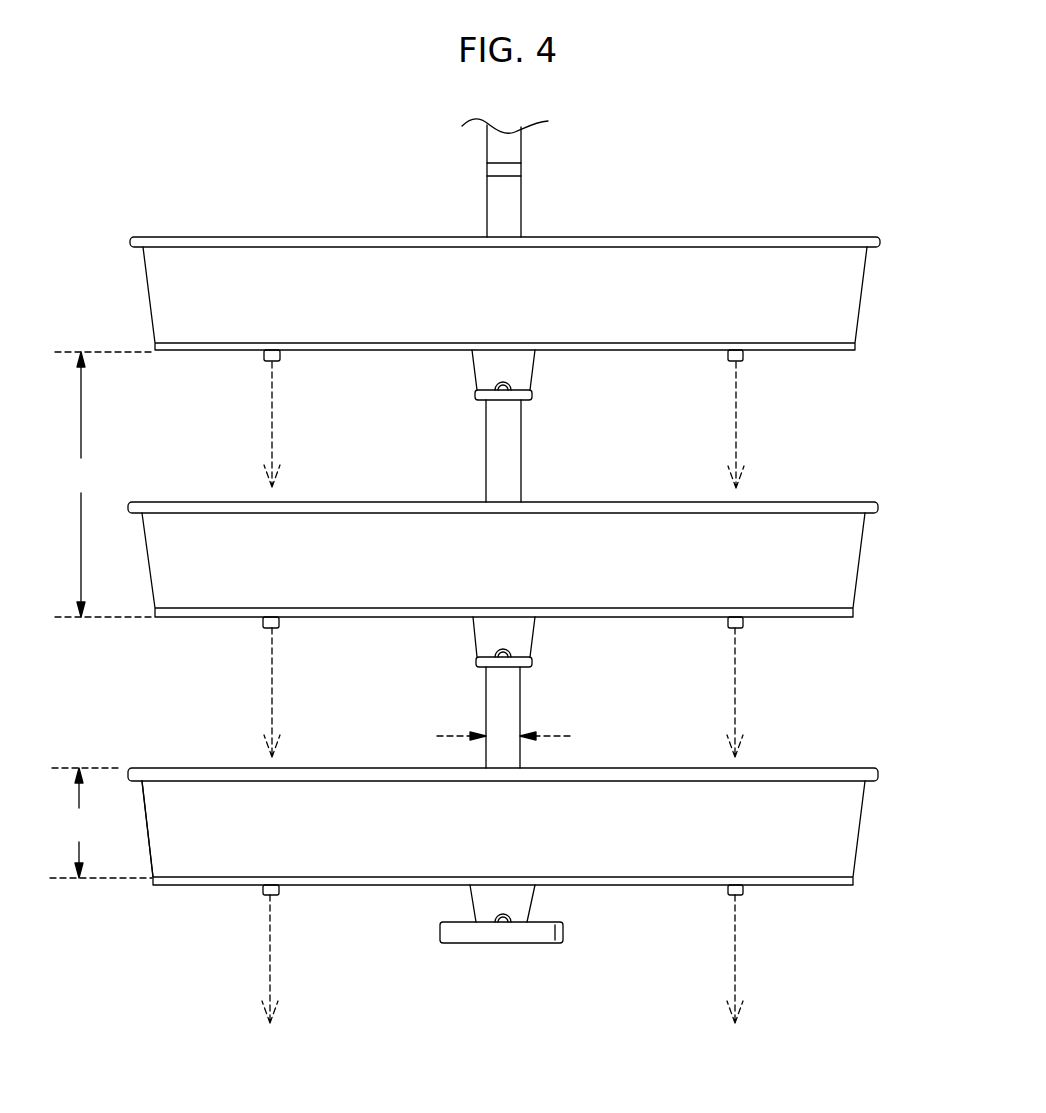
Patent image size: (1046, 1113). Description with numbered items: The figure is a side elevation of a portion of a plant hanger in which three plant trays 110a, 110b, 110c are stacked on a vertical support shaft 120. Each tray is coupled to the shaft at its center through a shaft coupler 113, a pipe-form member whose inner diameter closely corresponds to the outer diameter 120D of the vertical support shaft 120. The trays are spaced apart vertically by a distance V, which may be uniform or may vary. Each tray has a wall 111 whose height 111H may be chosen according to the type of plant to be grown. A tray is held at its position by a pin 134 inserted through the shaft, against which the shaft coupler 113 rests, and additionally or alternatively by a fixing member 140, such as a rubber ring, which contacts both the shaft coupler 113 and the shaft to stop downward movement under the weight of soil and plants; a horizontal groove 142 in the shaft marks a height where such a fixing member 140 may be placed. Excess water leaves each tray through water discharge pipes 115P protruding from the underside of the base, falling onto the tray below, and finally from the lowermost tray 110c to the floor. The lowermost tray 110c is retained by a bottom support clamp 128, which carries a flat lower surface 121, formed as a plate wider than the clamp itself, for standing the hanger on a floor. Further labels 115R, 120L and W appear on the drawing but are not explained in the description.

The groove 142 is at (510, 162).
The vertical support shaft 120 is at (517, 208).
The plant tray 110a is at (838, 287).
The plant tray 110b is at (838, 550).
The plant tray 110c is at (838, 818).
The wall 111 is at (146, 822).
The height of wall 111H is at (101, 823).
The shaft coupler 113 is at (528, 364).
The fixing member 140 is at (527, 398).
The pin 134 is at (500, 383).
The water discharge pipe 115P is at (742, 354).
The tray foot (roller) 115R is at (742, 362).
The bottom support clamp 128 is at (525, 893).
The flat lower surface 121 is at (468, 940).
The column lower end 120L is at (552, 925).
The outer diameter of vertical support shaft 120D is at (472, 732).
The load direction W is at (272, 412).
The distance V is at (103, 484).